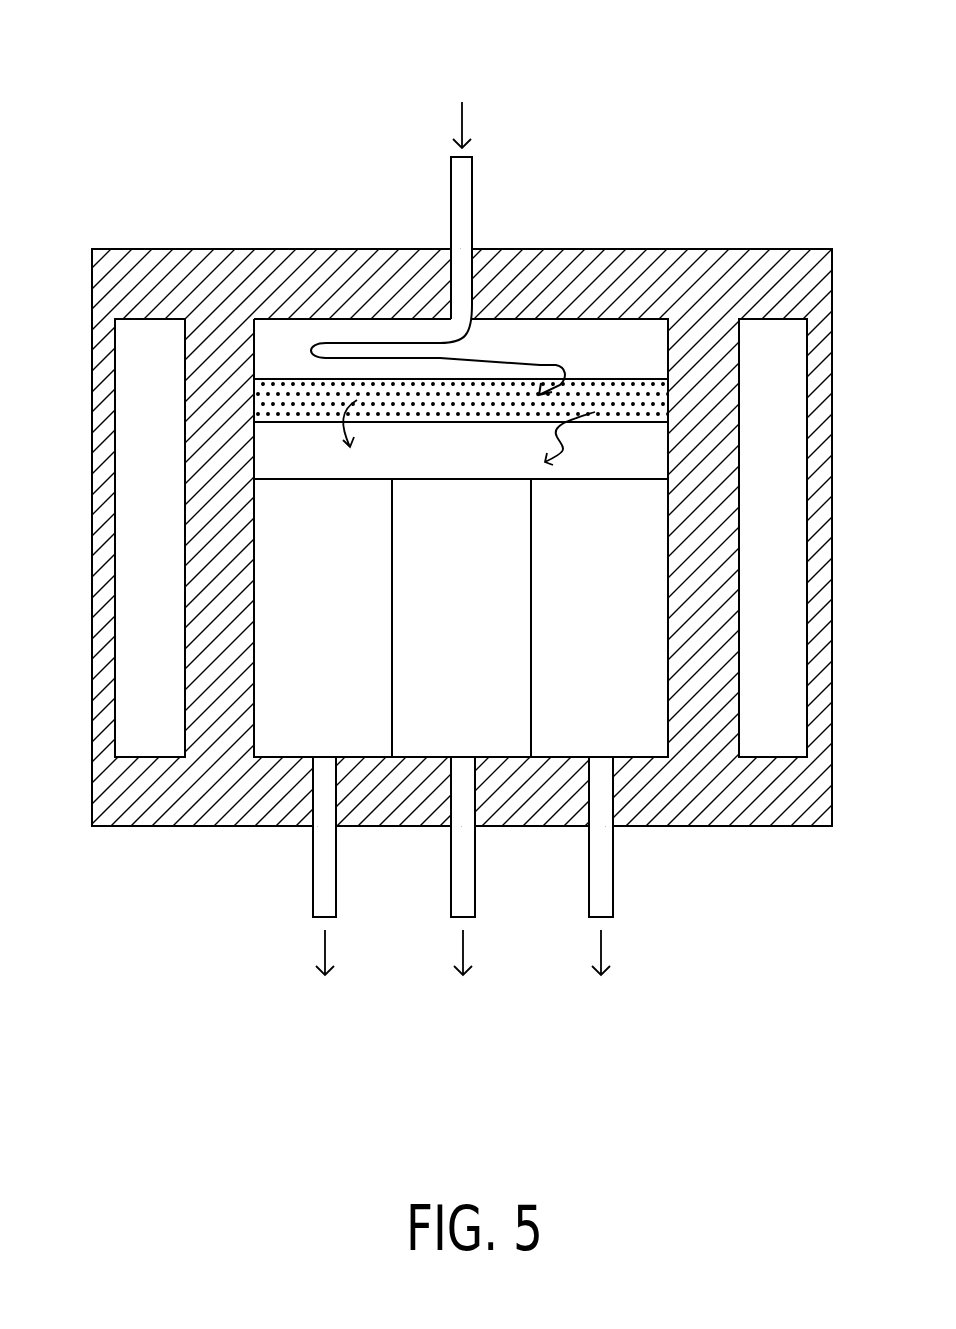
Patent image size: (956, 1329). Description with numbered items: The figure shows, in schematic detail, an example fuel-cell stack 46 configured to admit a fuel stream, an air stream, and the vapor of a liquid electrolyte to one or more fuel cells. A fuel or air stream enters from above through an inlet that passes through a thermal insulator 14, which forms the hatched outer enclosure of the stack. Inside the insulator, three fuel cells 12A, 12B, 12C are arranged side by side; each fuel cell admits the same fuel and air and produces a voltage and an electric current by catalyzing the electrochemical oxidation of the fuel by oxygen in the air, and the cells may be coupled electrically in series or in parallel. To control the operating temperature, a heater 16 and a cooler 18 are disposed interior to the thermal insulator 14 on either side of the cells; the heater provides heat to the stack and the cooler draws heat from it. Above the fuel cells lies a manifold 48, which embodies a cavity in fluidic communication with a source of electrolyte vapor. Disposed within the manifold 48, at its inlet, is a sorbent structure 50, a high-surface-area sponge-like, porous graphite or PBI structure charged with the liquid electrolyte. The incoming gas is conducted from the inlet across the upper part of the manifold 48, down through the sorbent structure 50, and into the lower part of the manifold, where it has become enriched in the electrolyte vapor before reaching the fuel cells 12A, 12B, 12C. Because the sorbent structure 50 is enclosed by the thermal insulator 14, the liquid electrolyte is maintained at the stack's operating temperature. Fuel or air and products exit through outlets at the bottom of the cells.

The fuel-cell stack 46 is at (147, 47).
The thermal insulator 14 is at (173, 827).
The heater 16 is at (164, 551).
The cooler 18 is at (787, 551).
The fuel cell 12A is at (346, 632).
The fuel cell 12B is at (484, 632).
The fuel cell 12C is at (623, 632).
The manifold 48 is at (298, 366).
The sorbent structure 50 is at (474, 414).